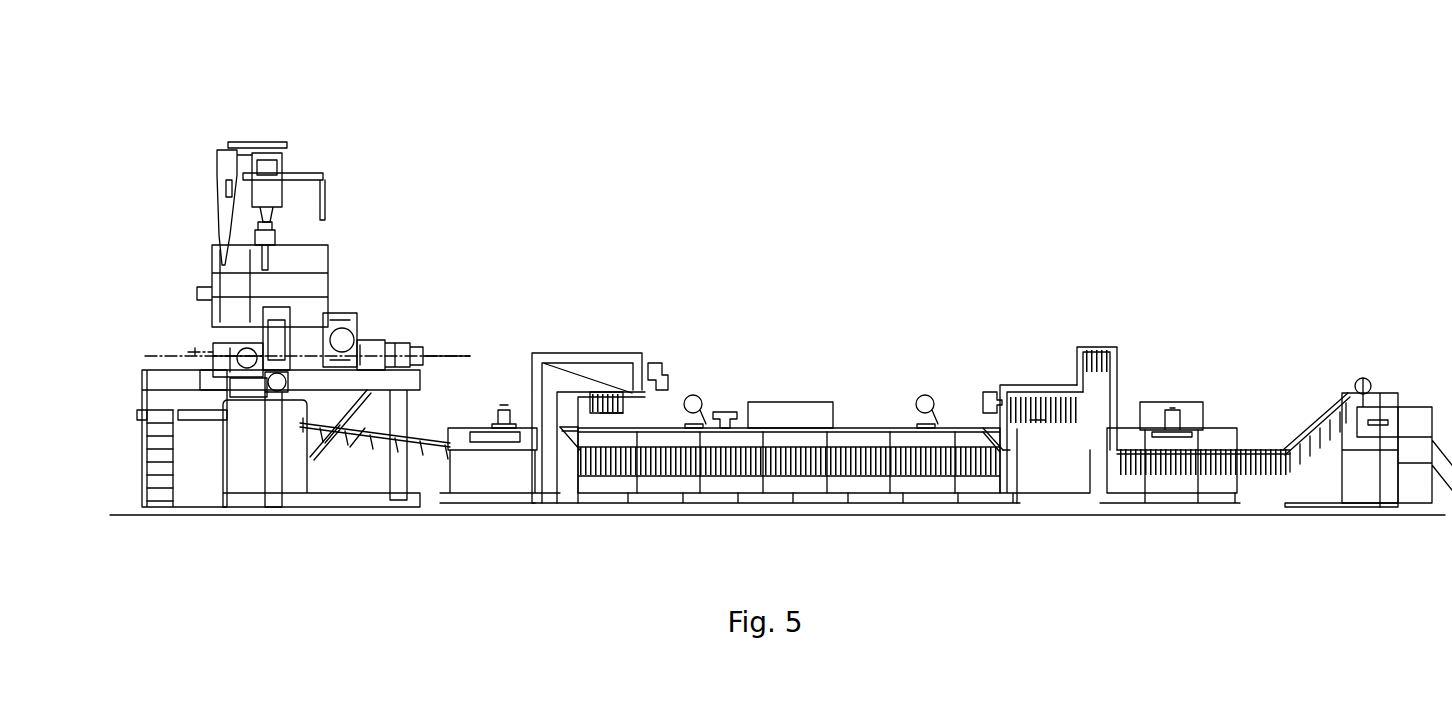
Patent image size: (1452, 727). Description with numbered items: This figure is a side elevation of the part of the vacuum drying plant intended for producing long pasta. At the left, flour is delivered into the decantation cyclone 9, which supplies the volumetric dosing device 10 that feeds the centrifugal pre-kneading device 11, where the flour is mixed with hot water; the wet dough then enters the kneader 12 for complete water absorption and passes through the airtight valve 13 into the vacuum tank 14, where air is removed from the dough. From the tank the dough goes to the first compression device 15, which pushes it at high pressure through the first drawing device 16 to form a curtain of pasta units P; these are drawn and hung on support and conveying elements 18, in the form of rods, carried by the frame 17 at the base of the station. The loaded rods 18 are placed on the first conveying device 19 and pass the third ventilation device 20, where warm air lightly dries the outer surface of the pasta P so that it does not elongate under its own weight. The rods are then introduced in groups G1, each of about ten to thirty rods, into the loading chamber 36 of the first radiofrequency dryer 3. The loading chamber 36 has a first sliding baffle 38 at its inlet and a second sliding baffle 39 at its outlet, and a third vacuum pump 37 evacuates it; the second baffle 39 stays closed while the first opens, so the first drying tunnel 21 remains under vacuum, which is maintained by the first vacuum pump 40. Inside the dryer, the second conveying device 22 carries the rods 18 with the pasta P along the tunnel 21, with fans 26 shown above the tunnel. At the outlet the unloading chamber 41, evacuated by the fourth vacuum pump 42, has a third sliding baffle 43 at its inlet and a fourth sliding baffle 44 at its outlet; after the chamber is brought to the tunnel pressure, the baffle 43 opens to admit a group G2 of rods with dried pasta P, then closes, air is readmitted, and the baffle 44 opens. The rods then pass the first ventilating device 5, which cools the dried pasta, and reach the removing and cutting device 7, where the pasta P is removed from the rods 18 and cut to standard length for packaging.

The decantation cyclone 9 is at (263, 150).
The volumetric dosing device 10 is at (268, 262).
The centrifugal pre-kneading device 11 is at (233, 284).
The kneader 12 is at (267, 270).
The airtight valve 13 is at (338, 318).
The vacuum tank 14 is at (347, 333).
The first compression device 15 is at (290, 357).
The first drawing device 16 is at (233, 365).
The extruder frame 17 is at (242, 432).
The support and conveying elements 18 is at (357, 443).
The pasta units P is at (363, 450).
The first conveying device 19 is at (420, 440).
The third ventilation device 20 is at (490, 443).
The second conveying device 22 is at (535, 383).
The first sliding baffle 38 is at (610, 415).
The loading chamber 36 is at (632, 410).
The third vacuum pump 37 is at (660, 365).
The fan 26 is at (700, 398).
The first vacuum pump 40 is at (725, 410).
The first radiofrequency dryer 3 is at (747, 430).
The first drying tunnel 21 is at (760, 487).
The second sliding baffle 39 is at (575, 445).
The group of support and conveying elements G1 is at (608, 428).
The third sliding baffle 43 is at (983, 430).
The group of support and conveying elements G2 is at (1033, 420).
The fourth vacuum pump 42 is at (980, 390).
The unloading chamber 41 is at (1040, 388).
The fourth sliding baffle 44 is at (1080, 347).
The first ventilating device 5 is at (1190, 402).
The removing and cutting device 7 is at (1385, 393).